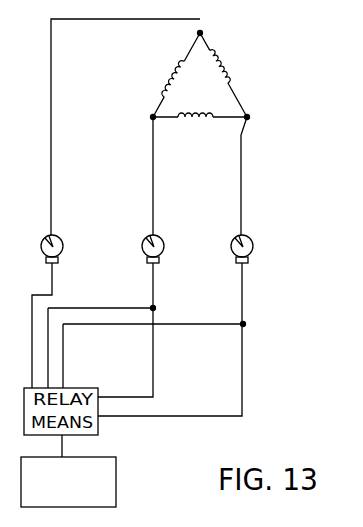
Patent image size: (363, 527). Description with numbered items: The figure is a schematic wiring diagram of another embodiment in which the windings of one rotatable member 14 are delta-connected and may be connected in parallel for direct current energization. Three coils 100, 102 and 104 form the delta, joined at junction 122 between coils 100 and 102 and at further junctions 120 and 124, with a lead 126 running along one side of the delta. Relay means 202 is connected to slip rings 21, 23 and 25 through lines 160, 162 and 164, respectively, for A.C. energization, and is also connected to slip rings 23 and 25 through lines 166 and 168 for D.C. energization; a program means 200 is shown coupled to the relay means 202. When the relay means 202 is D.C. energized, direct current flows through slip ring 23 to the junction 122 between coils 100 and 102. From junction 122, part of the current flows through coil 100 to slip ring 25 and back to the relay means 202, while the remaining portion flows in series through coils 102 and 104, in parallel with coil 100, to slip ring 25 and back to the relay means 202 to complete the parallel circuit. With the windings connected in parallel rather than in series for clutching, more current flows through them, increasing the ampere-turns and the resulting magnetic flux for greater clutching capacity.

The delta-connected winding 14 is at (206, 96).
The coil 100 is at (215, 120).
The coil 102 is at (178, 66).
The coil 104 is at (226, 70).
The junction terminal 120 is at (249, 119).
The junction 122 is at (151, 116).
The junction terminal 124 is at (202, 32).
The winding lead 126 is at (240, 100).
The slip ring 21 is at (63, 244).
The slip ring 23 is at (164, 244).
The slip ring 25 is at (253, 244).
The line 160 is at (52, 282).
The line 162 is at (97, 308).
The line 164 is at (128, 326).
The line 166 is at (153, 352).
The line 168 is at (218, 416).
The program means 200 is at (116, 496).
The relay means 202 is at (98, 430).